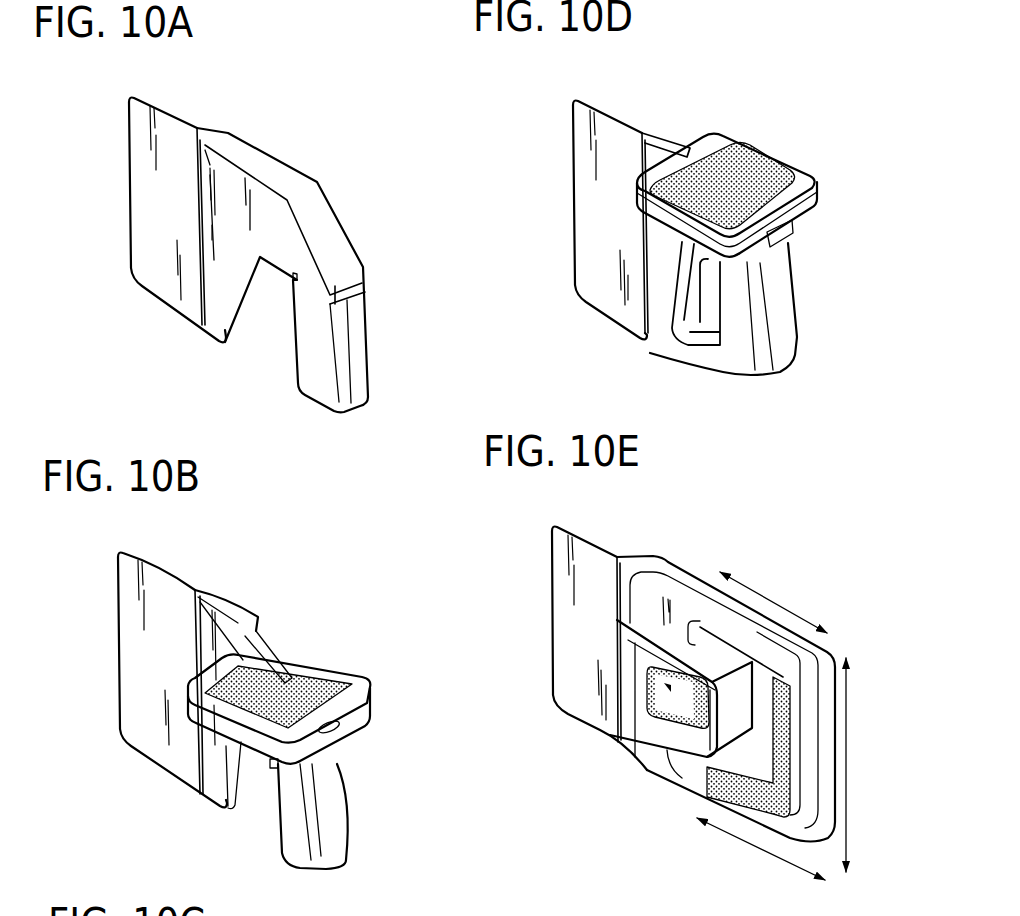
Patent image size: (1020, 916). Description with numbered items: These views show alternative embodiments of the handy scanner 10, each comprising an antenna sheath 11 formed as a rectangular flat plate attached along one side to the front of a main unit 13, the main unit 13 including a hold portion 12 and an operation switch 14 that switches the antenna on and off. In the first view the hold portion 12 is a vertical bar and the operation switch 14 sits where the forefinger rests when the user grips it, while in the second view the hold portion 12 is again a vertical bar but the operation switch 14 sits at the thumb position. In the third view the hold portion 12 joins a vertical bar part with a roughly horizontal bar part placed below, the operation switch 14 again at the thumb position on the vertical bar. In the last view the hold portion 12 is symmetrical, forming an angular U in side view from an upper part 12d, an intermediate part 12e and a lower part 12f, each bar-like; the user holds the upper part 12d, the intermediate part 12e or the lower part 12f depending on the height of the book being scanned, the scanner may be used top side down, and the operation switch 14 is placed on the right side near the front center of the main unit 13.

In FIG. 10A, the handy scanner 10 is at (270, 236).
In FIG. 10D, the handy scanner 10 is at (714, 212).
In FIG. 10B, the handy scanner 10 is at (257, 699).
In FIG. 10E, the handy scanner 10 is at (725, 687).
In FIG. 10A, the antenna sheath 11 is at (180, 135).
In FIG. 10D, the antenna sheath 11 is at (630, 153).
In FIG. 10B, the antenna sheath 11 is at (178, 602).
In FIG. 10E, the antenna sheath 11 is at (603, 567).
In FIG. 10A, the hold portion 12 is at (355, 345).
In FIG. 10D, the hold portion 12 is at (787, 330).
In FIG. 10B, the hold portion 12 is at (337, 823).
In FIG. 10E, the hold portion 12 is at (757, 721).
In FIG. 10A, the main unit 13 is at (323, 178).
In FIG. 10D, the main unit 13 is at (808, 168).
In FIG. 10B, the main unit 13 is at (320, 646).
In FIG. 10E, the main unit 13 is at (648, 780).
In FIG. 10A, the operation switch 14 is at (290, 293).
In FIG. 10D, the operation switch 14 is at (693, 338).
In FIG. 10B, the operation switch 14 is at (274, 768).
In FIG. 10E, the operation switch 14 is at (668, 687).
In FIG. 10E, the upper part 12d is at (773, 602).
In FIG. 10E, the intermediate part 12e is at (872, 765).
In FIG. 10E, the lower part 12f is at (761, 852).